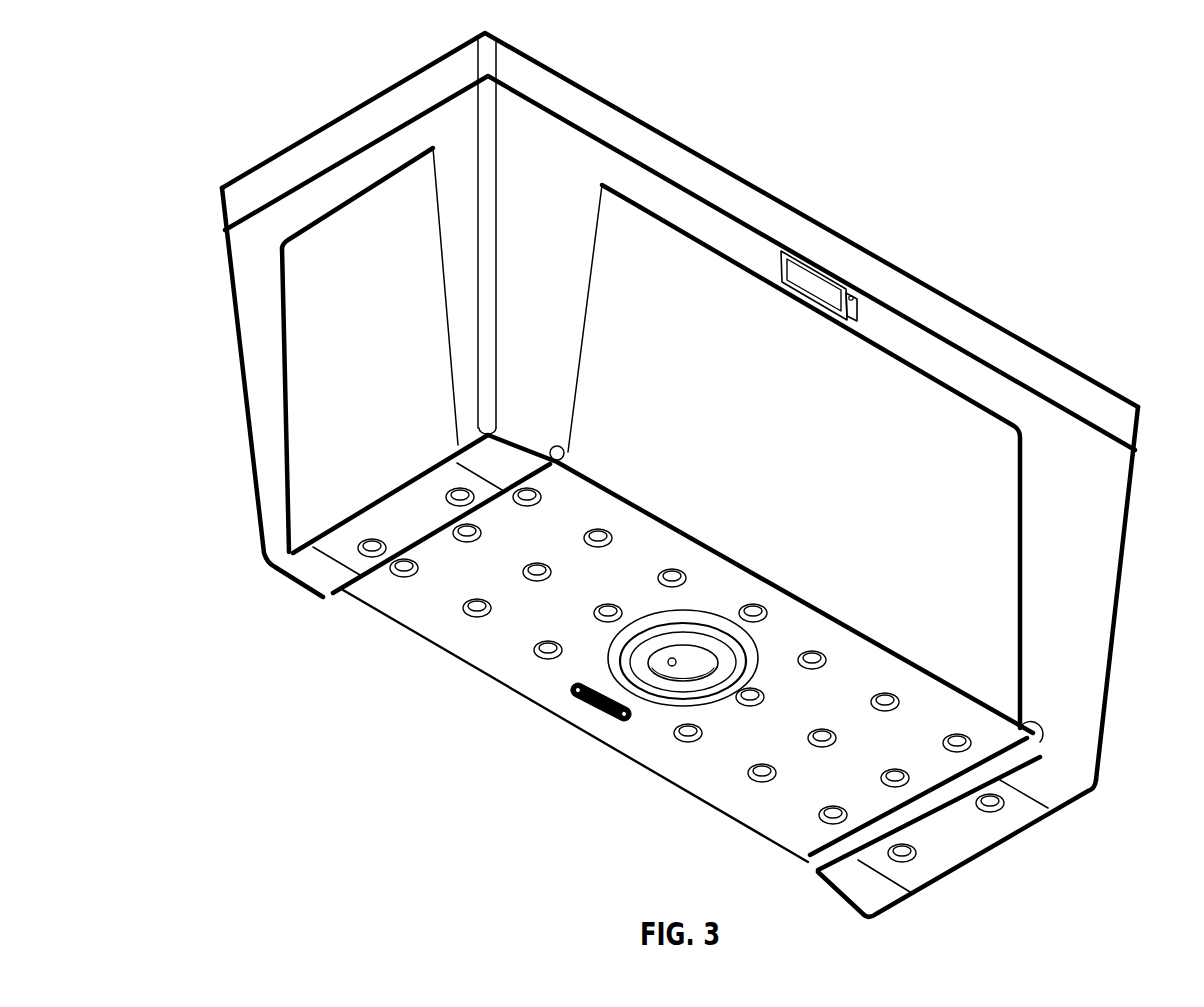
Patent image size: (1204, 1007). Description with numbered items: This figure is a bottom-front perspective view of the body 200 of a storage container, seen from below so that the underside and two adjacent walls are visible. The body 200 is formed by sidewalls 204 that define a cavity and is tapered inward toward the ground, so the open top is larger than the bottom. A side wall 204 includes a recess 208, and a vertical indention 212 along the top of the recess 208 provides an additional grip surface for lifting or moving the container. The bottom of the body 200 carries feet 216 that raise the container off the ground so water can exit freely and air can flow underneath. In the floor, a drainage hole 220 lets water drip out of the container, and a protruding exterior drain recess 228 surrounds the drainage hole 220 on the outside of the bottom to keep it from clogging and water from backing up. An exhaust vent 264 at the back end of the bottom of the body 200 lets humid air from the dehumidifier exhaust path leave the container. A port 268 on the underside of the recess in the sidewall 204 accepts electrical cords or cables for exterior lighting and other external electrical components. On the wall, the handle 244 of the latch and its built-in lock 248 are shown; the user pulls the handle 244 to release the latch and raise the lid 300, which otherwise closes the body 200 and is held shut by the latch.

The body 200 is at (1068, 680).
The sidewall 204 is at (1112, 507).
The recess 208 is at (403, 383).
The vertical indention 212 is at (322, 220).
The feet 216 is at (1048, 785).
The drainage hole 220 is at (670, 663).
The exterior drain recess 228 is at (685, 635).
The handle 244 is at (795, 265).
The lock 248 is at (850, 302).
The exhaust vent 264 is at (587, 702).
The port 268 is at (623, 205).
The lid 300 is at (992, 340).